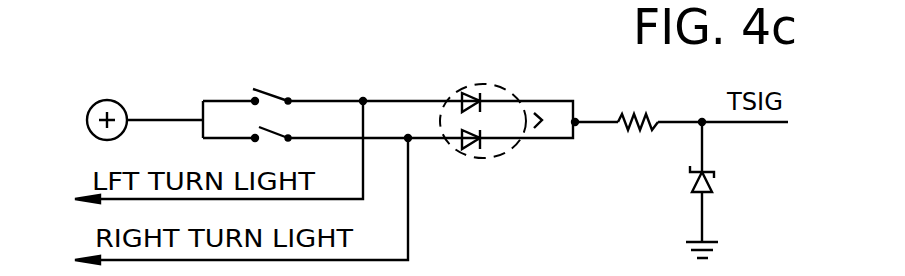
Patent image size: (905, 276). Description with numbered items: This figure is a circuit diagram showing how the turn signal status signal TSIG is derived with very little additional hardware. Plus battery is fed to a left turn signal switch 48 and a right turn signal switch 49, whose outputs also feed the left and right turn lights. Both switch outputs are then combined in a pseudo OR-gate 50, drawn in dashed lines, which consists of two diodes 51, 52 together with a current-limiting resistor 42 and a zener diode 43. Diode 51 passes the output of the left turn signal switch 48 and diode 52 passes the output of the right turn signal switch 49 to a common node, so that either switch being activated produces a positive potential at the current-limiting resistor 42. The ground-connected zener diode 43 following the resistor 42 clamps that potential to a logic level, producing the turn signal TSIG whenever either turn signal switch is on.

The current-limiting resistor 42 is at (633, 114).
The zener diode 43 is at (714, 184).
The left turn signal switch 48 is at (258, 90).
The right turn signal switch 49 is at (262, 138).
The pseudo OR-gate 50 is at (513, 152).
The diode 51 is at (472, 93).
The diode 52 is at (472, 149).